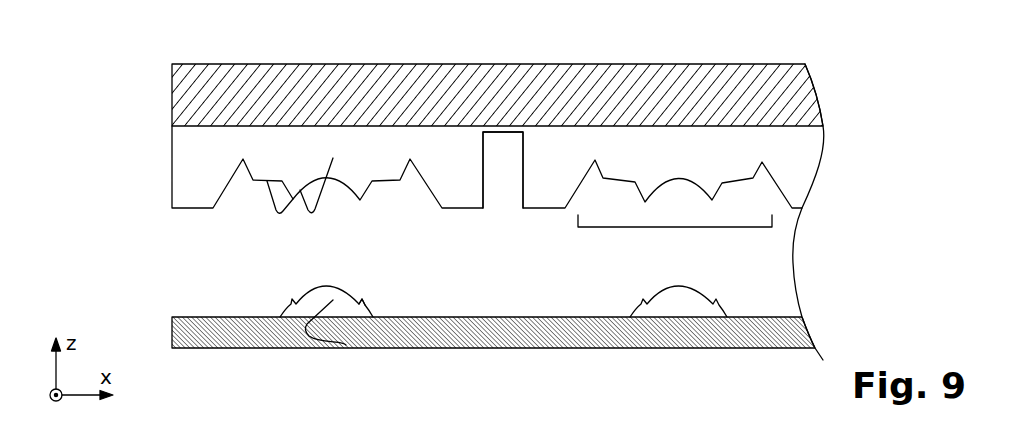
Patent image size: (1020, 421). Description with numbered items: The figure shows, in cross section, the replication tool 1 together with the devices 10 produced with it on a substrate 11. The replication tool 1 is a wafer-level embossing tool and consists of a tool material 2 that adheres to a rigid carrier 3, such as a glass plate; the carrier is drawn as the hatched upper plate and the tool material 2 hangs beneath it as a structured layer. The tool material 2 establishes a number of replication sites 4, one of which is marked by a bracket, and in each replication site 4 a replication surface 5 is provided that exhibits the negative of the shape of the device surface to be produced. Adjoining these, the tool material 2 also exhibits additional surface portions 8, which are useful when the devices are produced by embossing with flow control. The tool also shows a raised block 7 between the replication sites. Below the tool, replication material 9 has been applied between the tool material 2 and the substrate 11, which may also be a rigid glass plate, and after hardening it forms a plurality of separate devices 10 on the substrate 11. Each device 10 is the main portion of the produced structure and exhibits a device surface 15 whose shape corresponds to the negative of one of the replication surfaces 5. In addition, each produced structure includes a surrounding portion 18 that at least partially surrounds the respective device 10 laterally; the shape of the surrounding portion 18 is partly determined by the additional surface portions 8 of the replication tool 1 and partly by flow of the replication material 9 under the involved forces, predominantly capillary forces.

The replication tool 1 is at (102, 144).
The tool material 2 is at (185, 178).
The rigid carrier 3 is at (185, 97).
The replication site 4 is at (673, 227).
The replication surface 5 is at (333, 158).
The projection 7 is at (502, 160).
The additional surface portion 8 is at (267, 181).
The replication material 9 is at (303, 349).
The device 10 is at (346, 345).
The substrate 11 is at (543, 340).
The device surface 15 is at (313, 285).
The surrounding portion 18 is at (366, 307).